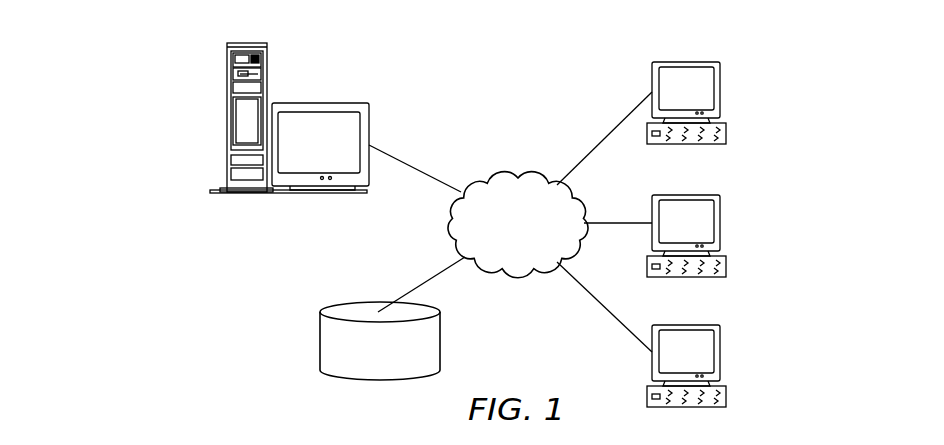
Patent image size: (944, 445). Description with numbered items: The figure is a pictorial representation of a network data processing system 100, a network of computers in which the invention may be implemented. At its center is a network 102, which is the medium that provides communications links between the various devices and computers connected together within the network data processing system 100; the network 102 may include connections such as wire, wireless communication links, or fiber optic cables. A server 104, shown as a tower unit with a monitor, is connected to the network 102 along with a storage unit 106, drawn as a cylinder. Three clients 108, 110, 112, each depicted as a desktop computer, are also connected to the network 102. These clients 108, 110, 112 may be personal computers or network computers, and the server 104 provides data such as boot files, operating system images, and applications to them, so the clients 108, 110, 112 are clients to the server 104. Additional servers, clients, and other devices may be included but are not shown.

The network data processing system 100 is at (568, 67).
The network 102 is at (490, 176).
The server 104 is at (227, 118).
The storage unit 106 is at (320, 340).
The client 108 is at (720, 90).
The client 110 is at (720, 223).
The client 112 is at (720, 352).